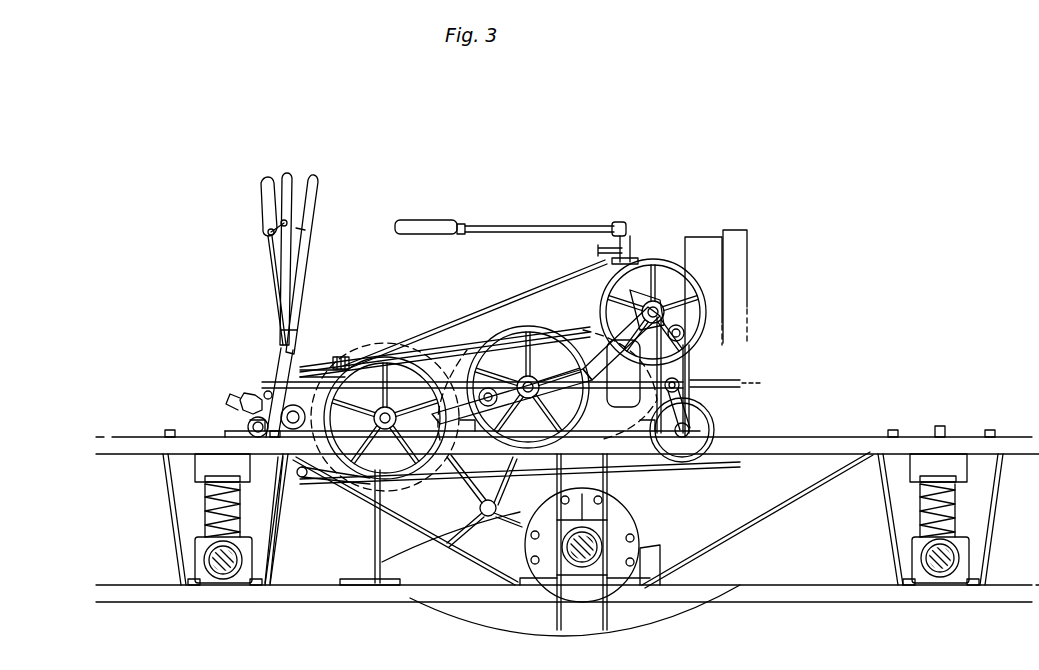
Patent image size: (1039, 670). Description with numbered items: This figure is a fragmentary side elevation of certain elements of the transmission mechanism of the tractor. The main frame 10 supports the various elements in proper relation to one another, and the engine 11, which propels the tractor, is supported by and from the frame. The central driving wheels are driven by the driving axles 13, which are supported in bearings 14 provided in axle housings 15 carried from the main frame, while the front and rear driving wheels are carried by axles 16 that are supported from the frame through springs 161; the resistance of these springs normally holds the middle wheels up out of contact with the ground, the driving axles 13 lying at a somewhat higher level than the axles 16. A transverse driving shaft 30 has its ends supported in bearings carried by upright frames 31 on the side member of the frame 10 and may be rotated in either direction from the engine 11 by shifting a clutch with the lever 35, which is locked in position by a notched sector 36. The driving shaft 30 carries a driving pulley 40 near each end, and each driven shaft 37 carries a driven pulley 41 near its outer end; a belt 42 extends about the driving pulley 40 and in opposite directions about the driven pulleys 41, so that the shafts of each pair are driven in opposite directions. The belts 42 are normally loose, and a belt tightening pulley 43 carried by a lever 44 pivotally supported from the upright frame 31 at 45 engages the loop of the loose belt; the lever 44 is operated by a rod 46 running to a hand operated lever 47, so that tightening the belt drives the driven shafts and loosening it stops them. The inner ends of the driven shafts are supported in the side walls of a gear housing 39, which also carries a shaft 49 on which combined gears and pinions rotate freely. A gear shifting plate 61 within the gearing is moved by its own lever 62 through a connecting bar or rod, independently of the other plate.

The main frame 10 is at (826, 437).
The engine 11 is at (703, 233).
The driving axle 13 is at (606, 537).
The bearing 14 is at (582, 568).
The axle housing 15 is at (618, 510).
The axle 16 is at (220, 572).
The spring 161 is at (205, 508).
The driving shaft 30 is at (660, 306).
The upright frame 31 is at (642, 383).
The lever 35 is at (500, 225).
The notched sector 36 is at (592, 244).
The driven shaft 37 is at (345, 488).
The gear housing 39 is at (425, 330).
The driving pulley 40 is at (604, 304).
The driven pulley 41 is at (399, 358).
The belt 42 is at (486, 317).
The belt tightening pulley 43 is at (708, 420).
The lever 44 is at (686, 400).
The pivot 45 is at (679, 384).
The rod 46 is at (312, 366).
The hand operated lever 47 is at (265, 340).
The shaft 49 is at (479, 508).
The gear shifting plate 61 is at (285, 259).
The lever 62 is at (339, 356).